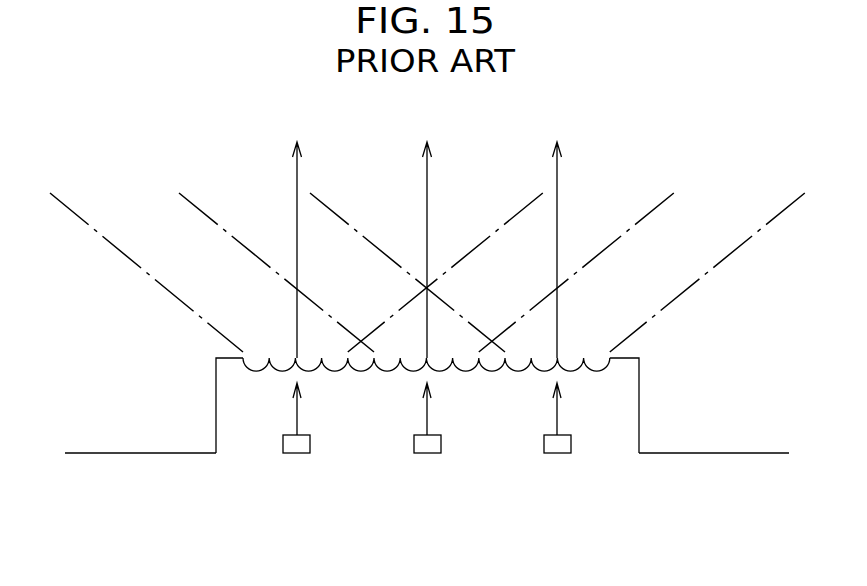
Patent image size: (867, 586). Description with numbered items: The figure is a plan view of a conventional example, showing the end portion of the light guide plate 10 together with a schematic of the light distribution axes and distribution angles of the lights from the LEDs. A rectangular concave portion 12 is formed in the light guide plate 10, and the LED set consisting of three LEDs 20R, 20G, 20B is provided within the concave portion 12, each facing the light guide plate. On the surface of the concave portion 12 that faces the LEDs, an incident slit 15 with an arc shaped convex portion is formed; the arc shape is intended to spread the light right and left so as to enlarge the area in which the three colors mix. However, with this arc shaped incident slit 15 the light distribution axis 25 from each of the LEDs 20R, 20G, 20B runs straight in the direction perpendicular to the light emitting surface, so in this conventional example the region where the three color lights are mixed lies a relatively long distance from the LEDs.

The light guide plate 10 is at (130, 442).
The concave portion 12 is at (217, 422).
The incident slit 15 is at (361, 372).
The light distribution axis 25 is at (296, 183).
The red LED 20R is at (297, 453).
The green LED 20G is at (427, 453).
The blue LED 20B is at (557, 453).